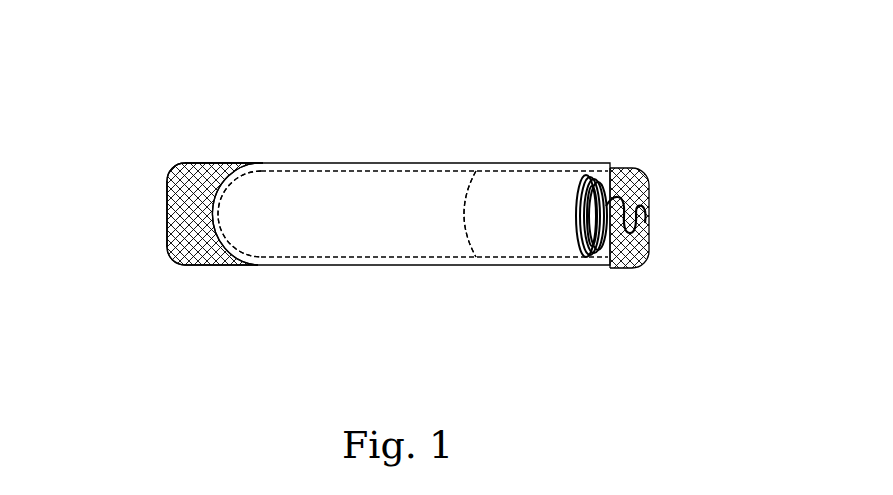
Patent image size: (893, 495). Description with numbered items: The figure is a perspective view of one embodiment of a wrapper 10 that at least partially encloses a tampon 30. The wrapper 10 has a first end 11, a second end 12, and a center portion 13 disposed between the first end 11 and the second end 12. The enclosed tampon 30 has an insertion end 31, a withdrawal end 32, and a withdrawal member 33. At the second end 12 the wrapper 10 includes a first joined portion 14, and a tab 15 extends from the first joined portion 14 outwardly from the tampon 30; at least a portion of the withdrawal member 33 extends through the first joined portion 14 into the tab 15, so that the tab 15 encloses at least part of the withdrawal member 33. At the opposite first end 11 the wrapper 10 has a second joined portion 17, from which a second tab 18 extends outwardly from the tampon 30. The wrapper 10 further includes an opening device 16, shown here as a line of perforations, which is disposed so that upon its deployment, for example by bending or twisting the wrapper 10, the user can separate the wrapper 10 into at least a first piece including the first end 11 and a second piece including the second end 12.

The wrapper 10 is at (167, 137).
The first end 11 is at (199, 152).
The second end 12 is at (627, 166).
The center portion 13 is at (407, 163).
The first joined portion 14 is at (613, 271).
The tab 15 is at (651, 244).
The opening device 16 is at (462, 228).
The second joined portion 17 is at (210, 248).
The second tab 18 is at (166, 226).
The tampon 30 is at (337, 200).
The insertion end 31 is at (258, 210).
The withdrawal end 32 is at (548, 216).
The withdrawal member 33 is at (569, 259).